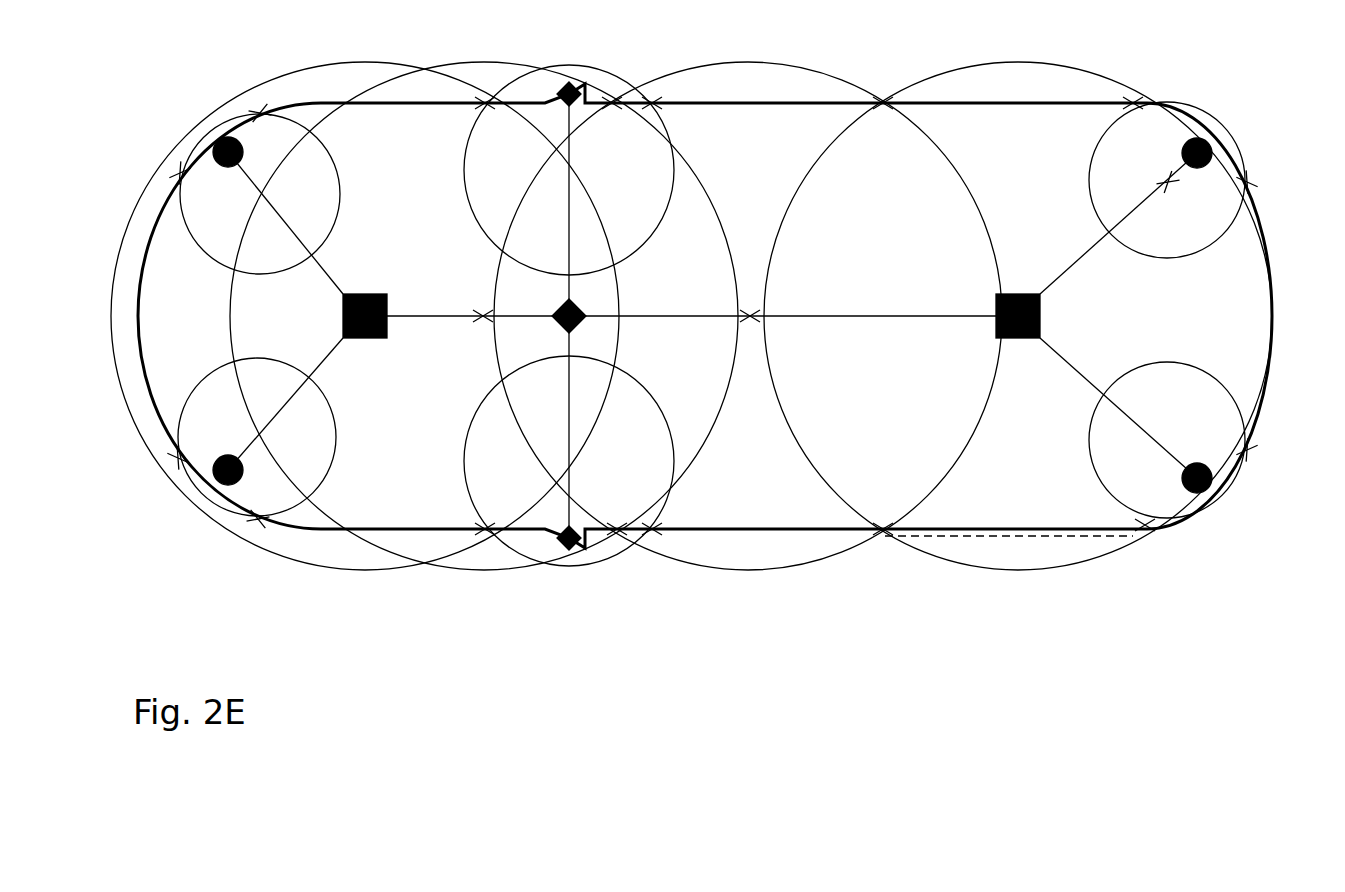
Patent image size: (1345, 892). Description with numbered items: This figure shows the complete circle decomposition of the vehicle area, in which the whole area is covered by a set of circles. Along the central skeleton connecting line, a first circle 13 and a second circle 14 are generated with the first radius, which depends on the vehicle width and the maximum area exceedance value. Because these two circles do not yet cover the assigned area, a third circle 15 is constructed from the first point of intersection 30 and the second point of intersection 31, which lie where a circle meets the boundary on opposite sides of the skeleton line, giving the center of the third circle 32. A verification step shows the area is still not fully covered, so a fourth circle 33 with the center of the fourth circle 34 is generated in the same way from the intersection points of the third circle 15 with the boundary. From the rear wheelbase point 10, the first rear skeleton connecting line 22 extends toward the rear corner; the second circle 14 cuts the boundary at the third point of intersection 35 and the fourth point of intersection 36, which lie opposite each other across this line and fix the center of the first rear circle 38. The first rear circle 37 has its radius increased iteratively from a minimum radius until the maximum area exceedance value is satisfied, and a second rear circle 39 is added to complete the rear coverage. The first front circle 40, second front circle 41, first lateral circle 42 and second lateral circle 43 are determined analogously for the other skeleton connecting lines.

The rear wheelbase point 10 is at (1013, 294).
The first circle 13 is at (378, 568).
The second circle 14 is at (1040, 568).
The third circle 15 is at (748, 570).
The first rear skeleton connecting line 22 is at (1065, 275).
The first point of intersection 30 is at (612, 100).
The second point of intersection 31 is at (617, 533).
The center of the third circle 32 is at (750, 312).
The fourth circle 33 is at (487, 568).
The center of the fourth circle 34 is at (482, 312).
The third point of intersection 35 is at (1133, 103).
The fourth point of intersection 36 is at (1257, 184).
The first rear circle 37 is at (1089, 168).
The center of the first rear circle 38 is at (1160, 182).
The second rear circle 39 is at (1207, 517).
The first front circle 40 is at (292, 115).
The second front circle 41 is at (207, 503).
The first lateral circle 42 is at (565, 66).
The second lateral circle 43 is at (571, 568).